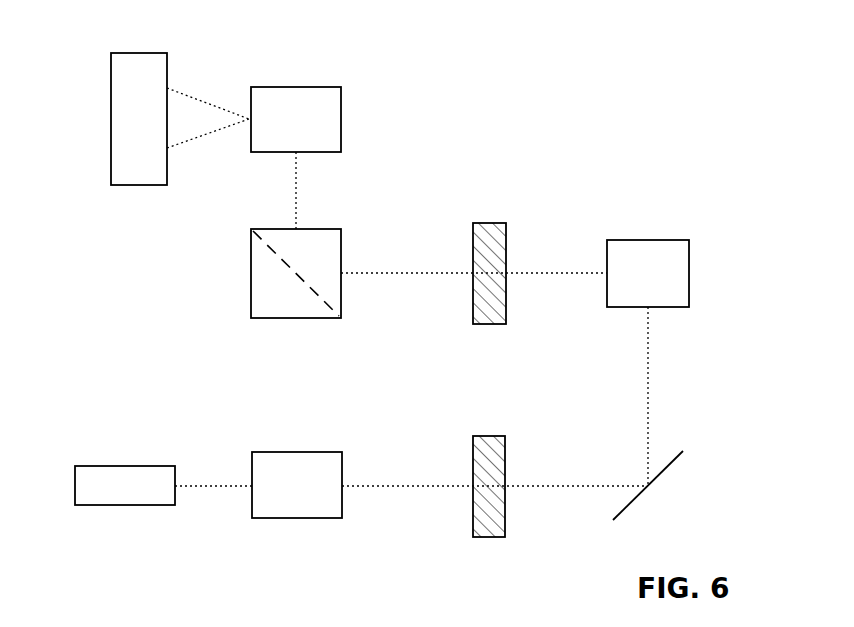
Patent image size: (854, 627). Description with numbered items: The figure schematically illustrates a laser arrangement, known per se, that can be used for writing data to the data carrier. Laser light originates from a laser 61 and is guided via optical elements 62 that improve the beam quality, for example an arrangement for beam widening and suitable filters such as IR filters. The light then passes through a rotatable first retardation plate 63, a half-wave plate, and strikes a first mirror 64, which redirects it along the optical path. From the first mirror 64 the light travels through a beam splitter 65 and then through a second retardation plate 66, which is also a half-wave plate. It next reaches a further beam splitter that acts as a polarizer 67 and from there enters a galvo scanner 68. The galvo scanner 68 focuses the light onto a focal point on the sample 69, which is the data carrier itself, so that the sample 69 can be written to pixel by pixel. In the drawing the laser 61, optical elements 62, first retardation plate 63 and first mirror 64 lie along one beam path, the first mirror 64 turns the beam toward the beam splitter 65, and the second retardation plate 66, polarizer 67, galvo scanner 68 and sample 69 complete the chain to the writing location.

The laser 61 is at (115, 483).
The optical elements 62 is at (300, 478).
The first retardation plate 63 is at (485, 468).
The first mirror 64 is at (667, 467).
The beam splitter 65 is at (677, 265).
The second retardation plate 66 is at (488, 235).
The polarizer 67 is at (328, 250).
The galvo scanner 68 is at (327, 123).
The sample 69 is at (153, 67).